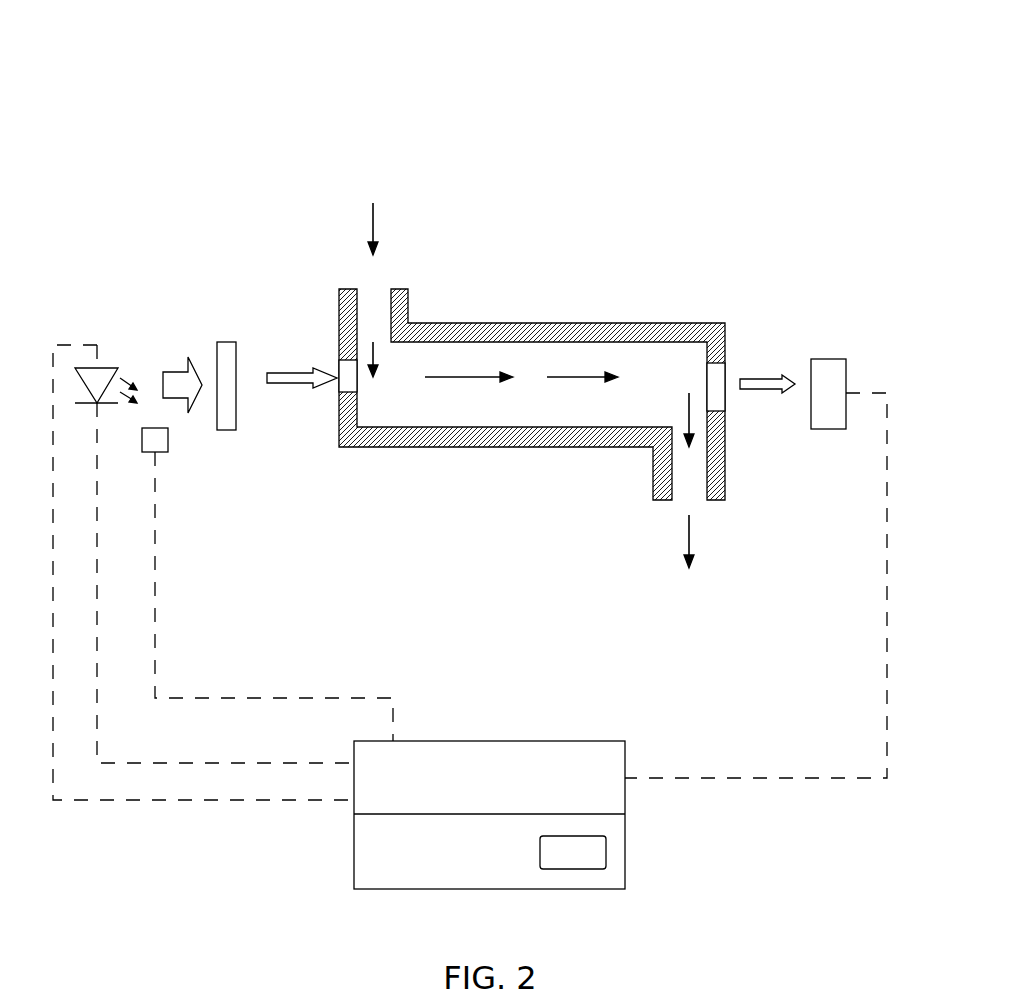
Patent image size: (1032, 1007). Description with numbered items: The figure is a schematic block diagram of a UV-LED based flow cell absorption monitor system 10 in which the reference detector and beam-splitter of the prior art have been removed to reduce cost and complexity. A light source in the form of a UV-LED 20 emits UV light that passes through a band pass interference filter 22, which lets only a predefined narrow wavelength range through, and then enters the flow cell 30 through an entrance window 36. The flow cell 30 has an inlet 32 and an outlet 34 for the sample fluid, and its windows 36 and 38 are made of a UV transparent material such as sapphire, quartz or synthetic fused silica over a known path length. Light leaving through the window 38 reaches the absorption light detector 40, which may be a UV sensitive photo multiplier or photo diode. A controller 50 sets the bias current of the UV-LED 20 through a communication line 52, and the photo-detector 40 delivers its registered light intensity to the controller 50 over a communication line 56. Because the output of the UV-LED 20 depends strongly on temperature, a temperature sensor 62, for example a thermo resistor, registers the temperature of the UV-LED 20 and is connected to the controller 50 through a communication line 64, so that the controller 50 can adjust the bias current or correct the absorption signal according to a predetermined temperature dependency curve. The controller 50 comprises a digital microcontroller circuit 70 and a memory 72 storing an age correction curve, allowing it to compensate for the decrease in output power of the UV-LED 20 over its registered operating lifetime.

The monitor system 10 is at (741, 104).
The UV-LED 20 is at (95, 332).
The band pass interference filter 22 is at (217, 342).
The flow cell 30 is at (497, 447).
The inlet 32 is at (373, 290).
The outlet 34 is at (688, 500).
The entrance window 36 is at (338, 377).
The window 38 is at (725, 387).
The absorption light detector 40 is at (828, 359).
The controller 50 is at (529, 740).
The communication line 52 is at (135, 800).
The communication line 56 is at (887, 660).
The temperature sensor 62 is at (168, 438).
The communication line 64 is at (155, 617).
The digital microcontroller circuit 70 is at (489, 786).
The memory 72 is at (573, 852).